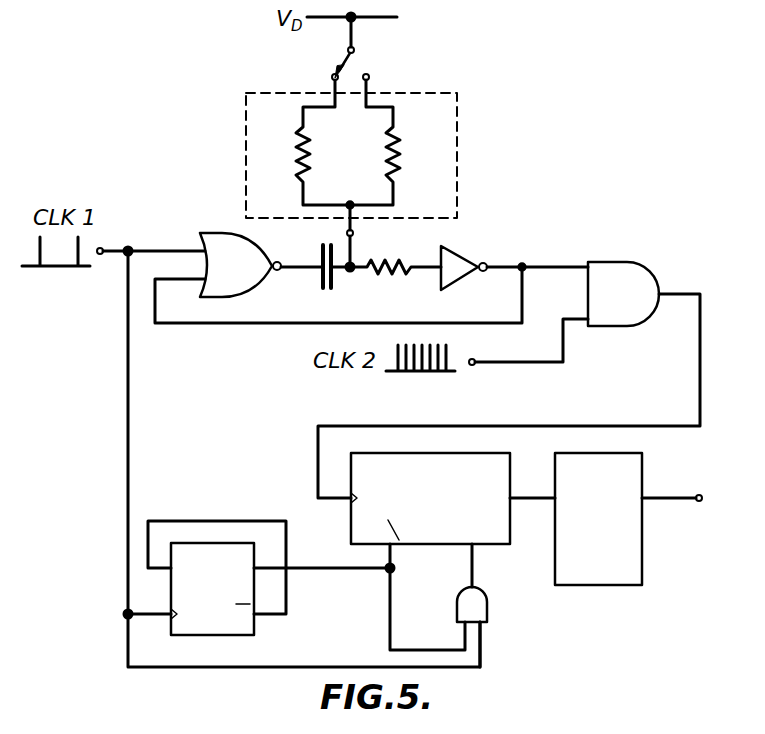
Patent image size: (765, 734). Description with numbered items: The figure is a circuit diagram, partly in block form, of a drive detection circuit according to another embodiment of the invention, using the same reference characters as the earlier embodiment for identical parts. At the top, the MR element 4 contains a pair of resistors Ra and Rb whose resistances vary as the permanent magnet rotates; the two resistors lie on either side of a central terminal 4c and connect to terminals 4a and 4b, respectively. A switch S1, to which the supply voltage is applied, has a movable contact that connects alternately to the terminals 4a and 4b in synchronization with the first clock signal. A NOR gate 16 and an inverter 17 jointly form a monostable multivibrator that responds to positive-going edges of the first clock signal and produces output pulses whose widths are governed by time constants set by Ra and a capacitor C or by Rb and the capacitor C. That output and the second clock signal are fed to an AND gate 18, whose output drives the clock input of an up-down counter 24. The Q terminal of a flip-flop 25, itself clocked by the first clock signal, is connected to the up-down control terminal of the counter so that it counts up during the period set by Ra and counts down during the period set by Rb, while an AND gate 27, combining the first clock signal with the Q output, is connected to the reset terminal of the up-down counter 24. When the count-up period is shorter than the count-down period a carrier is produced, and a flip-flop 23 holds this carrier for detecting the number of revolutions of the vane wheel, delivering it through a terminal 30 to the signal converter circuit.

The MR element 4 is at (457, 122).
The terminal 4a is at (331, 77).
The terminal 4b is at (370, 77).
The central terminal 4c is at (354, 233).
The switch S1 is at (352, 68).
The NOR gate 16 is at (231, 233).
The inverter 17 is at (458, 253).
The AND gate 18 is at (646, 263).
The flip-flop 23 is at (643, 473).
The up-down counter 24 is at (515, 470).
The flip-flop 25 is at (255, 631).
The AND gate 27 is at (490, 607).
The terminal 30 is at (697, 503).